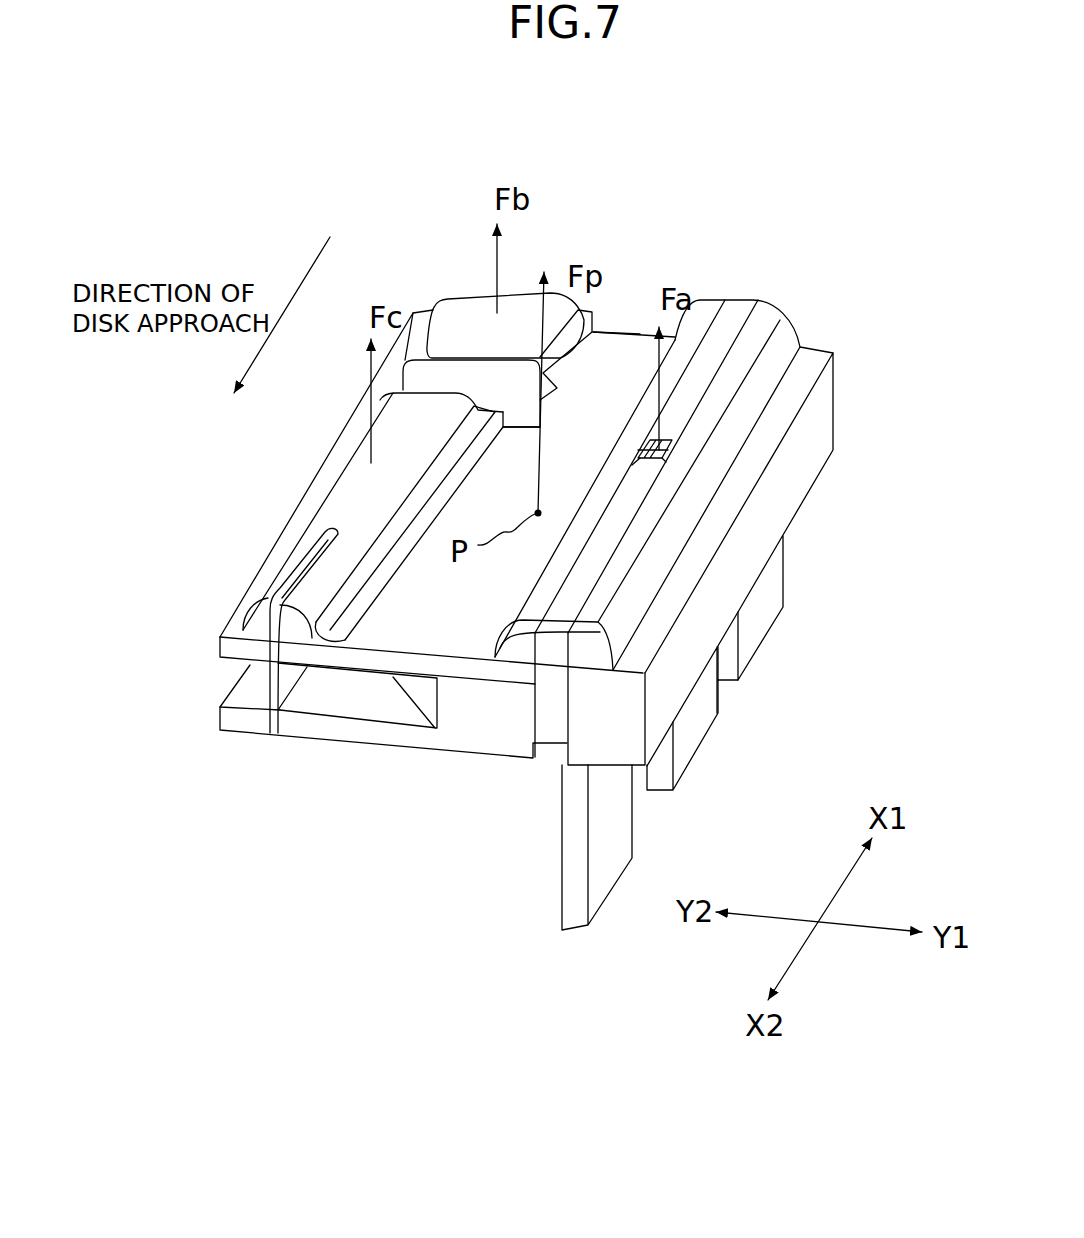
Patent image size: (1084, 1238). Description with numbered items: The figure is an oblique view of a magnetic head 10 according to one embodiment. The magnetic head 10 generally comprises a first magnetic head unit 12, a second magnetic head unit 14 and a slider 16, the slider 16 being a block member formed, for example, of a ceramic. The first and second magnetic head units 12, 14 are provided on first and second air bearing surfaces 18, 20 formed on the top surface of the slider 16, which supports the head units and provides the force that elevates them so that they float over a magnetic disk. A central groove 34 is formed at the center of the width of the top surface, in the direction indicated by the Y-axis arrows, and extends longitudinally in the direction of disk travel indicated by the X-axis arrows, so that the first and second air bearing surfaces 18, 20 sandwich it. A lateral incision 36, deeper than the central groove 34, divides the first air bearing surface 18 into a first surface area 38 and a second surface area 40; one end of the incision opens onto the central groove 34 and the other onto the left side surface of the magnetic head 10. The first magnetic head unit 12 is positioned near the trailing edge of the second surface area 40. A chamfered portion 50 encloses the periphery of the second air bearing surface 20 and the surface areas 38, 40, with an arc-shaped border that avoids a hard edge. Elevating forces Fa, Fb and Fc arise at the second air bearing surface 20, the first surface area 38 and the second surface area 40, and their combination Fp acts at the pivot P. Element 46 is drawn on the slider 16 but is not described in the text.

The magnetic head 10 is at (393, 182).
The first magnetic head unit 12 is at (306, 538).
The second magnetic head unit 14 is at (676, 420).
The slider 16 is at (848, 432).
The first air bearing surface 18 is at (398, 270).
The second air bearing surface 20 is at (766, 325).
The central groove 34 is at (635, 338).
The lateral incision 36 is at (490, 385).
The first surface area 38 is at (464, 302).
The second surface area 40 is at (375, 428).
The ridge 46 is at (713, 305).
The chamfered portion 50 is at (477, 422).